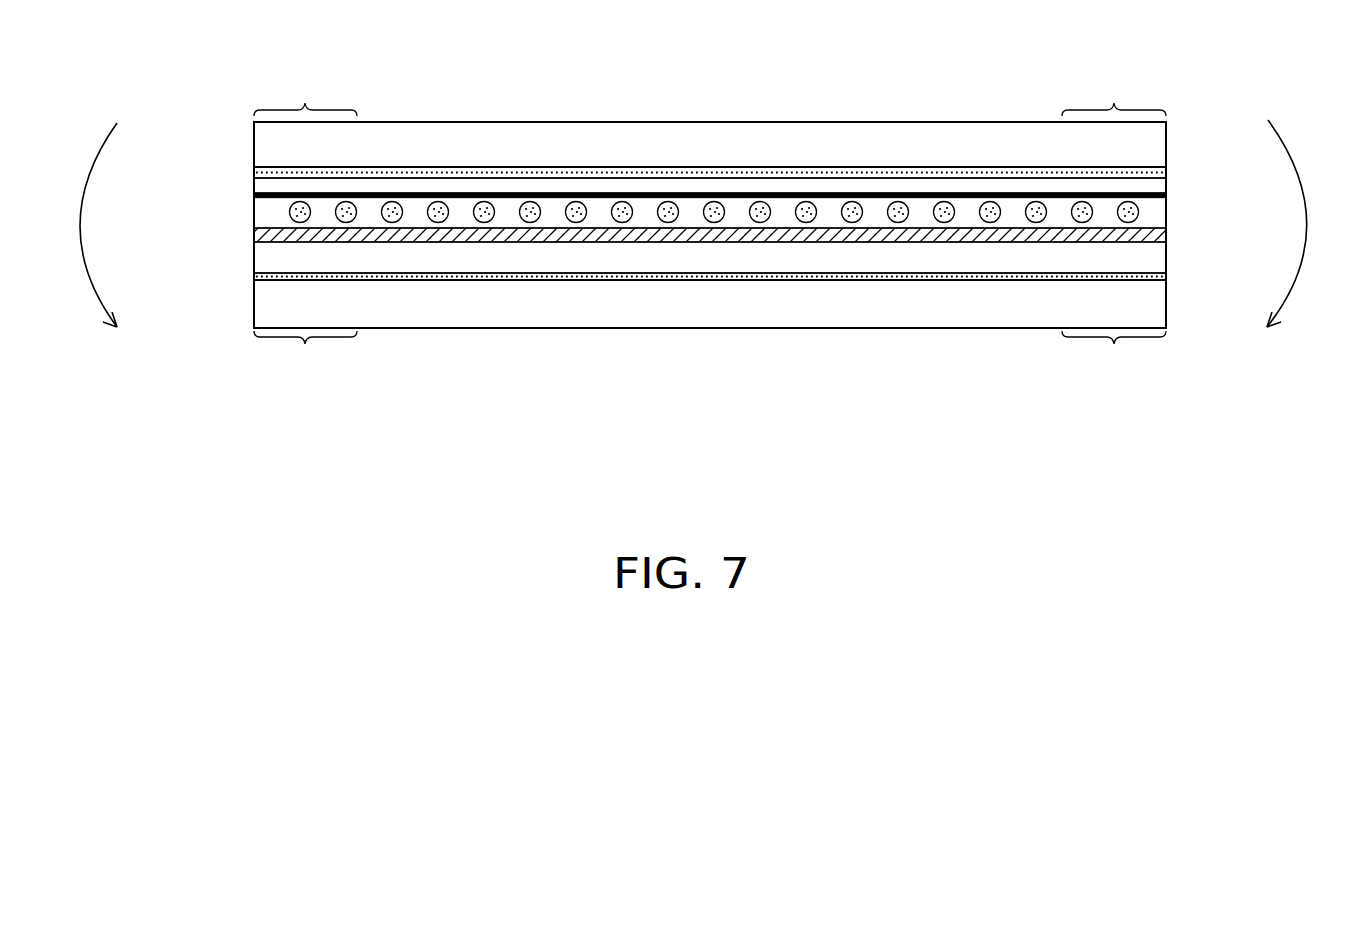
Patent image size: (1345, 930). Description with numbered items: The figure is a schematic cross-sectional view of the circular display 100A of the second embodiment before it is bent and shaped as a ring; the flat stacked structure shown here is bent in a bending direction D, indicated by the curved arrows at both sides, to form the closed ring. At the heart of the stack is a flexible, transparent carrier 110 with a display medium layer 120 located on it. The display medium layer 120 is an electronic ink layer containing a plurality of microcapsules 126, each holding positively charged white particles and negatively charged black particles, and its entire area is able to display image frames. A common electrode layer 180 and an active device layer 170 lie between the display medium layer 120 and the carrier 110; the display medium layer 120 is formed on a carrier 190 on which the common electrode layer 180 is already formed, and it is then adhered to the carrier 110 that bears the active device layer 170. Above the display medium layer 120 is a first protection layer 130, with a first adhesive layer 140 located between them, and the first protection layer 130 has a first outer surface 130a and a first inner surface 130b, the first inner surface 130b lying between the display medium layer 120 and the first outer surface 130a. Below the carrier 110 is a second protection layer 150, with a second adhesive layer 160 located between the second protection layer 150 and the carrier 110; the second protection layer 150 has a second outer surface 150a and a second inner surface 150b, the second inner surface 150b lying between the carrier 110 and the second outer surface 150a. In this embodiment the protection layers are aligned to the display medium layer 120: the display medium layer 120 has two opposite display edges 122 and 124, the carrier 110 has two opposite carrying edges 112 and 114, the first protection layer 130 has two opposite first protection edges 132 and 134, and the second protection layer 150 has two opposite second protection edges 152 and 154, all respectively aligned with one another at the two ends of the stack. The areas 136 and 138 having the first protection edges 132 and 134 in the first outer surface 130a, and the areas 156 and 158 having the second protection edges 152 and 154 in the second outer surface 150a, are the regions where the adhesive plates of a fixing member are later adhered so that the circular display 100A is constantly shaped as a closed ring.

The circular display 100A is at (1296, 507).
The carrier 110 is at (849, 260).
The carrying edge 112 is at (1166, 257).
The carrying edge 114 is at (254, 255).
The display medium layer 120 is at (735, 217).
The display edge 122 is at (1166, 208).
The display edge 124 is at (254, 212).
The microcapsules 126 is at (991, 215).
The first protection layer 130 is at (552, 157).
The first outer surface 130a is at (412, 122).
The first inner surface 130b is at (482, 167).
The first protection edge 132 is at (1166, 145).
The first protection edge 134 is at (253, 140).
The first protection edge area 136 is at (1114, 89).
The first protection edge area 138 is at (305, 92).
The first adhesive layer 140 is at (596, 175).
The second protection layer 150 is at (957, 308).
The second outer surface 150a is at (412, 328).
The second inner surface 150b is at (483, 282).
The second protection edge 152 is at (1167, 305).
The second protection edge 154 is at (254, 302).
The second protection edge area 156 is at (1114, 358).
The second protection edge area 158 is at (305, 358).
The second adhesive layer 160 is at (903, 276).
The active device layer 170 is at (781, 232).
The common electrode layer 180 is at (690, 197).
The carrier 190 is at (644, 185).
The bending direction D is at (696, 223).